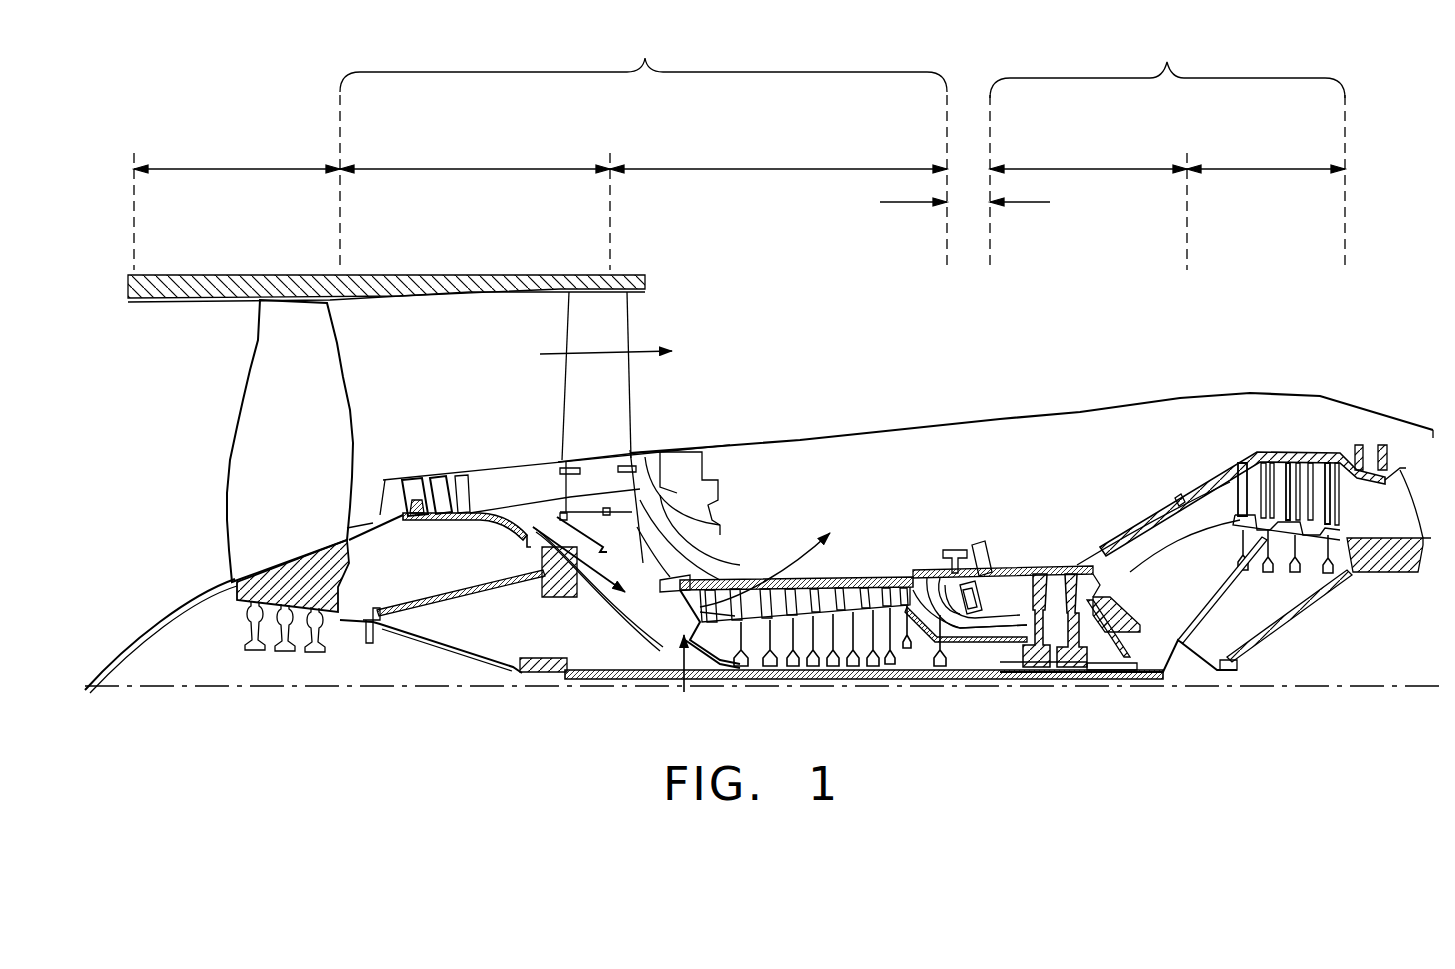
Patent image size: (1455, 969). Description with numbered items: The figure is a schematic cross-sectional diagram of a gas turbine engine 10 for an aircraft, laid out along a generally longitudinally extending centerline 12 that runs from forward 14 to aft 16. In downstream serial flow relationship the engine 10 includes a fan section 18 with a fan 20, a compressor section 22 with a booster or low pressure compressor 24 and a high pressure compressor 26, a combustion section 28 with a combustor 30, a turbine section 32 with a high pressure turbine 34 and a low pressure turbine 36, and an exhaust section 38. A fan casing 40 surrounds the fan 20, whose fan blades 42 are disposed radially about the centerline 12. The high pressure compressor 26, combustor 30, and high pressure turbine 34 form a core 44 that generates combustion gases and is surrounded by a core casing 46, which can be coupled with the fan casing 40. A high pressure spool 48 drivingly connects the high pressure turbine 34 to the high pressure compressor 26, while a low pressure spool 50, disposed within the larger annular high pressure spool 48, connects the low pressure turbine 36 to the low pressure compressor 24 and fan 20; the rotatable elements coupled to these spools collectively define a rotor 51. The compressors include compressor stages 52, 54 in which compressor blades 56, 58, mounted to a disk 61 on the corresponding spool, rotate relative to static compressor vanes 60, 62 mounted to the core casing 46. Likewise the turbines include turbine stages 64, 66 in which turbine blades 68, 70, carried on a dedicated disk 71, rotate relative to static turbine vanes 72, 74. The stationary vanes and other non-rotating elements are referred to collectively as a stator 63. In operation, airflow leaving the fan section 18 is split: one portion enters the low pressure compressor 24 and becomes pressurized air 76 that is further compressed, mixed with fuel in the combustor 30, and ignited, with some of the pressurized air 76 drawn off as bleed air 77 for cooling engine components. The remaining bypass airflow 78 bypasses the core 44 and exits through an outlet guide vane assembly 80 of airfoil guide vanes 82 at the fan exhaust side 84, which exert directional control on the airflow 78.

The gas turbine engine 10 is at (1362, 198).
The centerline 12 is at (217, 688).
The forward 14 is at (167, 415).
The aft 16 is at (1450, 510).
The fan section 18 is at (238, 169).
The fan 20 is at (205, 538).
The compressor section 22 is at (645, 58).
The low pressure compressor 24 is at (484, 169).
The high pressure compressor 26 is at (786, 169).
The combustion section 28 is at (880, 202).
The combustor 30 is at (966, 535).
The turbine section 32 is at (1167, 62).
The high pressure turbine 34 is at (1082, 169).
The low pressure turbine 36 is at (1264, 169).
The exhaust section 38 is at (1412, 482).
The fan casing 40 is at (375, 274).
The fan blades 42 is at (312, 345).
The core 44 is at (908, 450).
The core casing 46 is at (1175, 495).
The high pressure spool 48 is at (947, 640).
The low pressure spool 50 is at (543, 675).
The rotor 51 is at (812, 682).
The compressor stages 52 is at (460, 432).
The compressor stages 54 is at (782, 535).
The compressor blades 56 is at (418, 470).
The compressor blades 58 is at (703, 574).
The static compressor vanes 60 is at (402, 470).
The disk 61 is at (412, 520).
The static compressor vanes 62 is at (688, 622).
The stator 63 is at (1245, 452).
The turbine stages 64 is at (1102, 520).
The turbine stages 66 is at (1268, 422).
The turbine blades 68 is at (1043, 590).
The turbine blades 70 is at (1330, 458).
The disk 71 is at (1290, 572).
The static turbine vanes 72 is at (1035, 572).
The static turbine vanes 74 is at (1313, 465).
The pressurized air 76 is at (583, 585).
The bleed air 77 is at (800, 530).
The bypass airflow 78 is at (552, 352).
The outlet guide vane assembly 80 is at (647, 410).
The airfoil guide vanes 82 is at (568, 388).
The fan exhaust side 84 is at (648, 322).